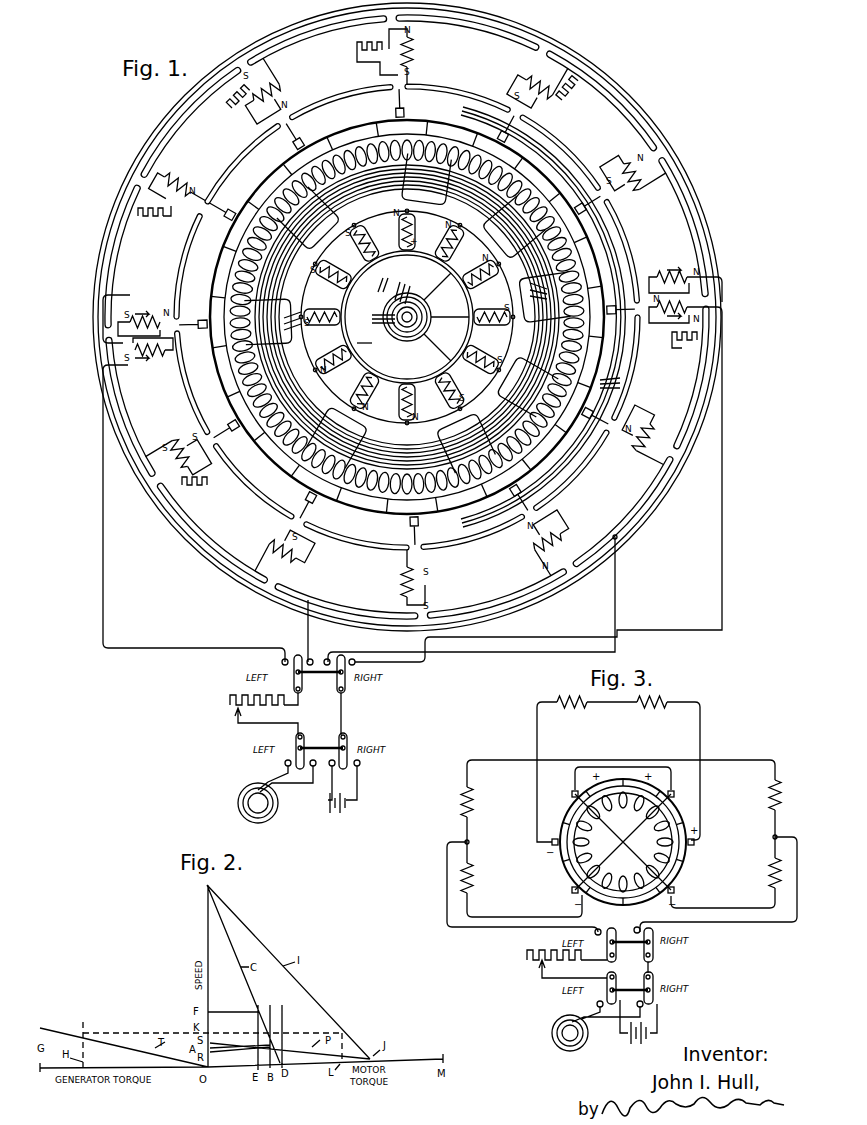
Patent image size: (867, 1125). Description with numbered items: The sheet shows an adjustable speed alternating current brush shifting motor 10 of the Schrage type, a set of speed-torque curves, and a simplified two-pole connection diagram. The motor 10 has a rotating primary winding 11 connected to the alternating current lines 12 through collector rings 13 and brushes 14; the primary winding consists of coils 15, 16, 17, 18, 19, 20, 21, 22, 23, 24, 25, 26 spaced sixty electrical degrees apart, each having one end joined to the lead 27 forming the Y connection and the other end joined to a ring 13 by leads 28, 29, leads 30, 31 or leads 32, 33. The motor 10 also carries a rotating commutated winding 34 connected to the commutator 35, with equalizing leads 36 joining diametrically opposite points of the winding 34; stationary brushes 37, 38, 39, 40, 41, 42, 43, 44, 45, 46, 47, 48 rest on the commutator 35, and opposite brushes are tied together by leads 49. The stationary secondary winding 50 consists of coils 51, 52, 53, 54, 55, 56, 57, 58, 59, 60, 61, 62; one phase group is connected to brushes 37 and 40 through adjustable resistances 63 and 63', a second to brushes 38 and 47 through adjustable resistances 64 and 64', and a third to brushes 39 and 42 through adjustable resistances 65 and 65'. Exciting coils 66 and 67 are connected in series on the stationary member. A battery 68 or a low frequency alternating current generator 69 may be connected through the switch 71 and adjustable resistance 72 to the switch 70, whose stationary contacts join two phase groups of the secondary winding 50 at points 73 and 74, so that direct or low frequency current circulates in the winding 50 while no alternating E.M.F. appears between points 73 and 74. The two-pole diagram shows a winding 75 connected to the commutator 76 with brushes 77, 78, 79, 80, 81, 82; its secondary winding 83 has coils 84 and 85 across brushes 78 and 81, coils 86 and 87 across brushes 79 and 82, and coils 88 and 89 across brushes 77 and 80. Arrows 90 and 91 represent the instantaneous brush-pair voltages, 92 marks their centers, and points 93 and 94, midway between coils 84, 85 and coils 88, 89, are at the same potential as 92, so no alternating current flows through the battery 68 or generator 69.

In FIG. 1, the adjustable speed alternating current brush shifting motor 10 is at (407, 317).
In FIG. 1, the secondary winding 50 is at (406, 316).
In FIG. 1, the primary winding 11 is at (407, 293).
In FIG. 1, the alternating current lines 12 is at (382, 275).
In FIG. 1, the collector rings 13 is at (375, 318).
In FIG. 1, the brushes 14 is at (406, 281).
In FIG. 1, the primary winding coil 15 is at (415, 228).
In FIG. 1, the primary winding coil 16 is at (458, 243).
In FIG. 1, the primary winding coil 17 is at (481, 275).
In FIG. 1, the primary winding coil 18 is at (493, 326).
In FIG. 1, the primary winding coil 19 is at (482, 361).
In FIG. 1, the primary winding coil 20 is at (446, 395).
In FIG. 1, the primary winding coil 21 is at (399, 403).
In FIG. 1, the primary winding coil 22 is at (357, 387).
In FIG. 1, the primary winding coil 23 is at (331, 355).
In FIG. 1, the primary winding coil 24 is at (323, 308).
In FIG. 1, the primary winding coil 25 is at (333, 269).
In FIG. 1, the primary winding coil 26 is at (371, 237).
In FIG. 1, the lead 27 is at (436, 203).
In FIG. 1, the lead 28 is at (440, 284).
In FIG. 1, the lead 29 is at (455, 280).
In FIG. 1, the lead 30 is at (374, 344).
In FIG. 1, the lead 31 is at (432, 342).
In FIG. 1, the lead 32 is at (454, 337).
In FIG. 1, the lead 33 is at (444, 318).
In FIG. 1, the commutated winding 34 is at (388, 158).
In FIG. 1, the commutator 35 is at (342, 128).
In FIG. 1, the equalizing leads 36 is at (407, 317).
In FIG. 1, the stationary brush 37 is at (224, 223).
In FIG. 1, the stationary brush 38 is at (296, 145).
In FIG. 1, the stationary brush 39 is at (398, 112).
In FIG. 1, the stationary brush 40 is at (502, 134).
In FIG. 1, the stationary brush 41 is at (579, 206).
In FIG. 1, the stationary brush 42 is at (612, 306).
In FIG. 1, the stationary brush 43 is at (589, 410).
In FIG. 1, the stationary brush 44 is at (513, 491).
In FIG. 1, the stationary brush 45 is at (410, 522).
In FIG. 1, the stationary brush 46 is at (309, 497).
In FIG. 1, the stationary brush 47 is at (236, 428).
In FIG. 1, the stationary brush 48 is at (203, 327).
In FIG. 1, the leads 49 is at (621, 383).
In FIG. 1, the secondary winding coil 51 is at (186, 184).
In FIG. 1, the secondary winding coil 52 is at (272, 88).
In FIG. 1, the secondary winding coil 53 is at (396, 44).
In FIG. 1, the secondary winding coil 54 is at (528, 78).
In FIG. 1, the secondary winding coil 55 is at (636, 188).
In FIG. 1, the secondary winding coil 56 is at (538, 476).
In FIG. 1, the secondary winding coil 57 is at (645, 441).
In FIG. 1, the secondary winding coil 58 is at (552, 538).
In FIG. 1, the secondary winding coil 59 is at (406, 588).
In FIG. 1, the secondary winding coil 60 is at (278, 553).
In FIG. 1, the secondary winding coil 61 is at (182, 463).
In FIG. 1, the secondary winding coil 62 is at (131, 319).
In FIG. 1, the adjustable resistance 63 is at (154, 223).
In FIG. 1, the adjustable resistance 63' is at (580, 89).
In FIG. 1, the adjustable resistance 64 is at (230, 102).
In FIG. 1, the adjustable resistance 64' is at (198, 493).
In FIG. 1, the adjustable resistance 65 is at (366, 58).
In FIG. 1, the adjustable resistance 65' is at (685, 349).
In FIG. 1, the exciting coil 66 is at (679, 279).
In FIG. 1, the exciting coil 67 is at (194, 499).
In FIG. 1, the battery 68 is at (338, 795).
In FIG. 3, the battery 68 is at (642, 1023).
In FIG. 1, the low frequency alternating current generator 69 is at (255, 790).
In FIG. 3, the low frequency alternating current generator 69 is at (560, 1021).
In FIG. 1, the switch 70 is at (320, 675).
In FIG. 3, the switch 70 is at (628, 946).
In FIG. 1, the switch 71 is at (320, 746).
In FIG. 3, the switch 71 is at (628, 988).
In FIG. 1, the adjustable resistance 72 is at (243, 703).
In FIG. 3, the adjustable resistance 72 is at (548, 958).
In FIG. 1, the point 73 is at (619, 537).
In FIG. 1, the point 74 is at (310, 600).
In FIG. 3, the winding 75 is at (623, 842).
In FIG. 3, the commutator 76 is at (566, 874).
In FIG. 3, the brush 77 is at (570, 795).
In FIG. 3, the brush 78 is at (675, 793).
In FIG. 3, the brush 79 is at (692, 846).
In FIG. 3, the brush 80 is at (665, 895).
In FIG. 3, the brush 81 is at (580, 895).
In FIG. 3, the brush 82 is at (554, 838).
In FIG. 3, the secondary winding 83 is at (721, 792).
In FIG. 3, the coil 84 is at (471, 877).
In FIG. 3, the coil 85 is at (471, 806).
In FIG. 3, the coil 86 is at (575, 706).
In FIG. 3, the coil 87 is at (655, 706).
In FIG. 3, the coil 88 is at (772, 809).
In FIG. 3, the coil 89 is at (772, 874).
In FIG. 3, the arrow 90 is at (623, 842).
In FIG. 3, the arrow 91 is at (623, 842).
In FIG. 3, the centers of arrows 92 is at (623, 842).
In FIG. 3, the midpoint 93 is at (465, 841).
In FIG. 3, the midpoint 94 is at (777, 836).